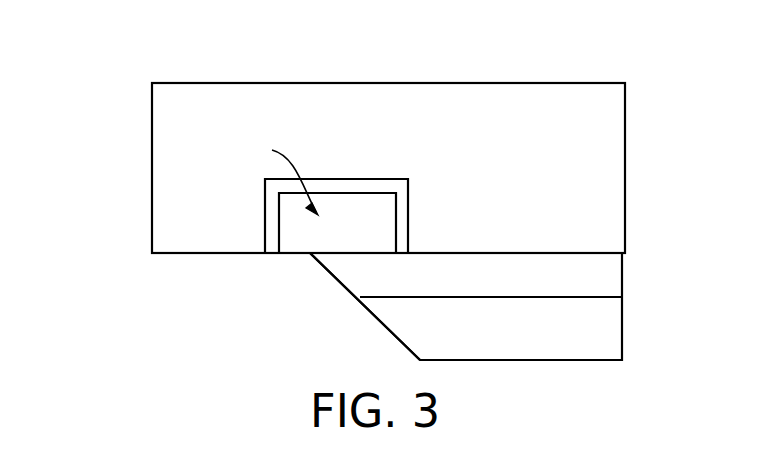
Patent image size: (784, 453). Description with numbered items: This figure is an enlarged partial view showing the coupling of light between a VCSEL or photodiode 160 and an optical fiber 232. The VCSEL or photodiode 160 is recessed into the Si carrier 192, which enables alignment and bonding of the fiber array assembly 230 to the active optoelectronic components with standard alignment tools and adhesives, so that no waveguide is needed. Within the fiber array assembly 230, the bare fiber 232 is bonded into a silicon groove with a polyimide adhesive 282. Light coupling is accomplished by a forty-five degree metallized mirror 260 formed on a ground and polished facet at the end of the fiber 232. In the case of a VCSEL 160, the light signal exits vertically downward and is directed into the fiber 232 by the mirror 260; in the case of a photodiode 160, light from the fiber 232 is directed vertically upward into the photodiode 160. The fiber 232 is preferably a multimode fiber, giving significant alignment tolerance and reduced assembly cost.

The VCSEL or photodiode 160 is at (372, 208).
The Si carrier 192 is at (612, 120).
The polyimide adhesive 282 is at (270, 213).
The 45 degree metallized mirror 260 is at (372, 318).
The fiber 232 is at (622, 275).
The fiber array assembly 230 is at (622, 343).